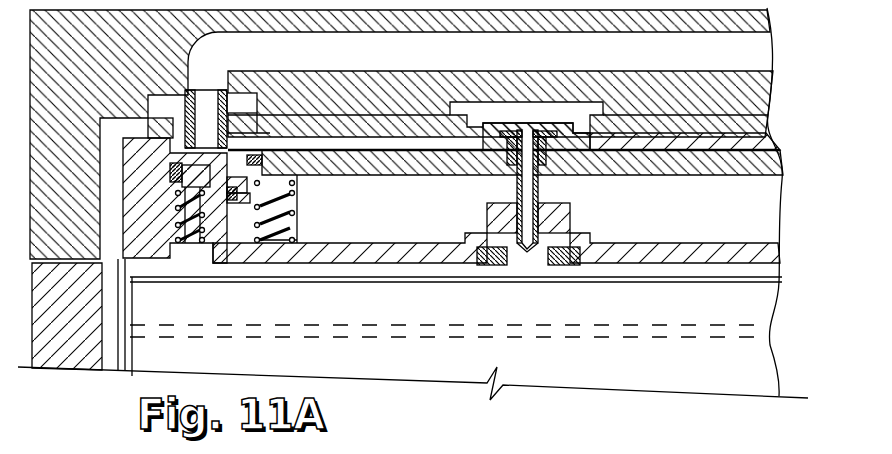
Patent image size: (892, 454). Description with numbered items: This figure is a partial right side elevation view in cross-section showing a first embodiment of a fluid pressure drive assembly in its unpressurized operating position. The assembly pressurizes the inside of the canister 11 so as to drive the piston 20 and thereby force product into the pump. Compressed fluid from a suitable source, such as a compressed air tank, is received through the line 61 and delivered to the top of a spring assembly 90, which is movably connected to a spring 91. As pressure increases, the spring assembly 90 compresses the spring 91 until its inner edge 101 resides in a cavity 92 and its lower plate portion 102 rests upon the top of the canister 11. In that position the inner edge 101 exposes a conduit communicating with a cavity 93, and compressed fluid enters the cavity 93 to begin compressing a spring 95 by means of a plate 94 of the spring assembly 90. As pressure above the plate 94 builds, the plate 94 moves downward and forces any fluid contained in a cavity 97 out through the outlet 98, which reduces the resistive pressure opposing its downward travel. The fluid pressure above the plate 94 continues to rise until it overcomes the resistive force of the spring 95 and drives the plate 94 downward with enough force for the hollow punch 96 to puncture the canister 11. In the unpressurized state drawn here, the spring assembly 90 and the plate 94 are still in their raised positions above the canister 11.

The canister 11 is at (703, 282).
The piston 20 is at (528, 325).
The line 61 is at (665, 65).
The spring assembly 90 is at (256, 246).
The spring 91 is at (177, 235).
The cavity 92 is at (201, 147).
The cavity 93 is at (556, 128).
The plate 94 is at (390, 173).
The spring 95 is at (297, 203).
The hollow punch 96 is at (540, 183).
The cavity 97 is at (688, 220).
The outlet 98 is at (233, 248).
The inner edge 101 is at (247, 152).
The lower plate portion 102 is at (716, 250).